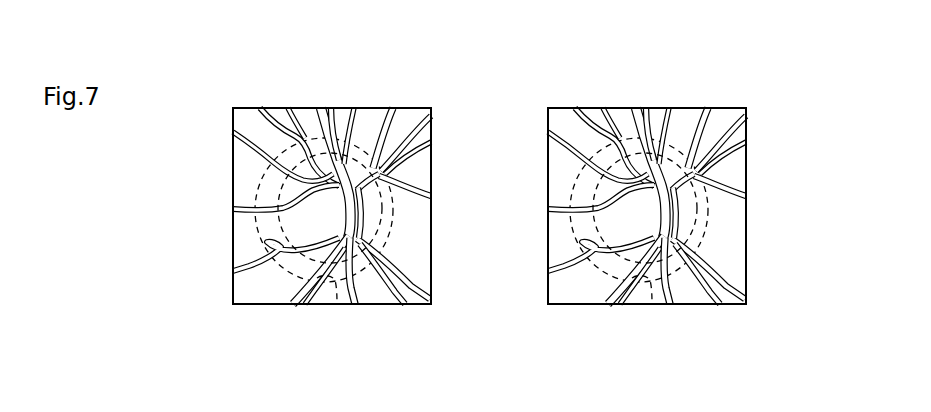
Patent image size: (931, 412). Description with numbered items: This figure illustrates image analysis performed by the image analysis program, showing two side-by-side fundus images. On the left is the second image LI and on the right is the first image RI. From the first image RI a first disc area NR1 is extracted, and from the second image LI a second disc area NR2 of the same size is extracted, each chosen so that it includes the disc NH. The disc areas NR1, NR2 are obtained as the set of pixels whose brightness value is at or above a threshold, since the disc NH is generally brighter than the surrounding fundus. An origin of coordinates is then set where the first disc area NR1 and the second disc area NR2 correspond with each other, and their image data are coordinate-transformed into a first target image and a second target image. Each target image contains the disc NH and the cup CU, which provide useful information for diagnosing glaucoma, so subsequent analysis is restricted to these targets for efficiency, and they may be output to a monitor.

The second image LI is at (332, 178).
The first image RI is at (647, 176).
The first disc area NR1 is at (652, 105).
The second disc area NR2 is at (343, 107).
The cup CU is at (283, 248).
The disc NH is at (337, 305).